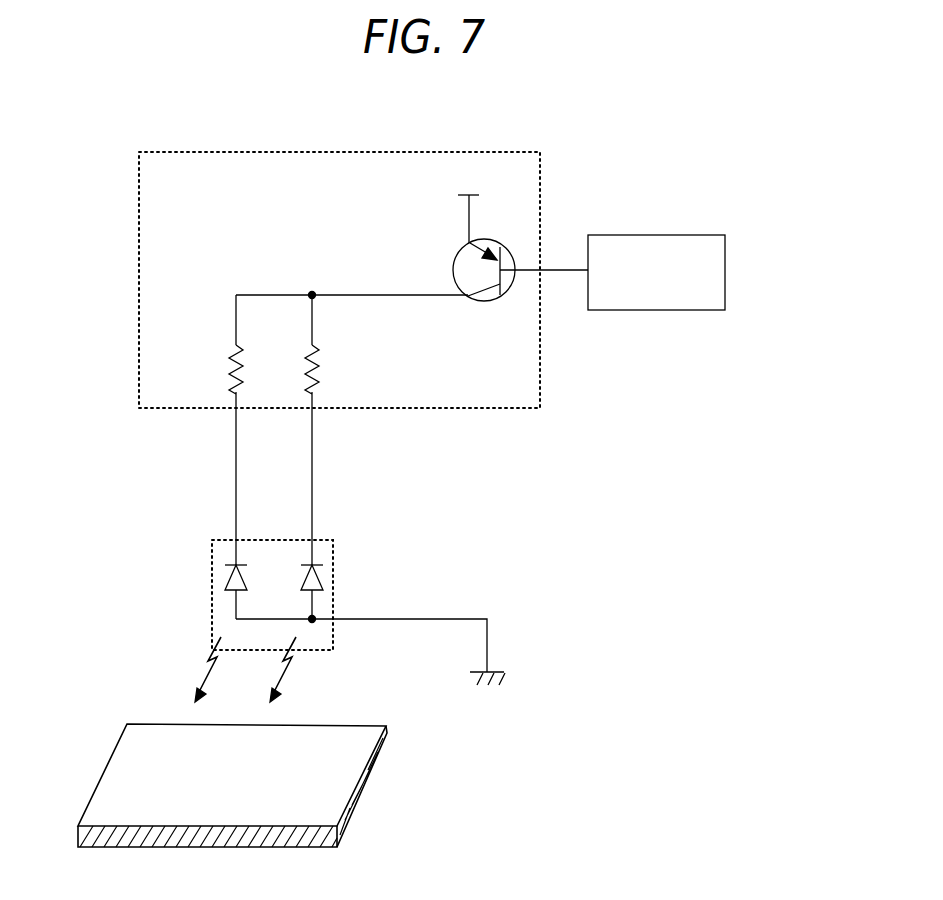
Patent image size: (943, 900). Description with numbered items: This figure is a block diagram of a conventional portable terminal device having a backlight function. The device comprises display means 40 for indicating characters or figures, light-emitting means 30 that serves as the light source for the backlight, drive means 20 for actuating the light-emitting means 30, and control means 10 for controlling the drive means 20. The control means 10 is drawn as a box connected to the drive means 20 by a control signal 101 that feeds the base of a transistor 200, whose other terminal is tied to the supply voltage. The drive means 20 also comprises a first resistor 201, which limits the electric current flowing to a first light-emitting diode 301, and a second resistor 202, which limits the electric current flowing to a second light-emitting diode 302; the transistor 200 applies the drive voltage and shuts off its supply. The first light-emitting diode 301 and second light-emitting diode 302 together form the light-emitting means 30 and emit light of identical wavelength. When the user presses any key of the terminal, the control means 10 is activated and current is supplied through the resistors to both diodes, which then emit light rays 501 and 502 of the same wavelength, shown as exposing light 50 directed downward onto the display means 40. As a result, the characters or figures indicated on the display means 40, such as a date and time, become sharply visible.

The control means 10 is at (725, 272).
The drive means 20 is at (540, 173).
The light-emitting means 30 is at (333, 572).
The display means 40 is at (365, 793).
The exposing light 50 is at (186, 688).
The control signal 101 is at (568, 277).
The transistor 200 is at (453, 266).
The first resistor 201 is at (227, 368).
The second resistor 202 is at (323, 368).
The first light-emitting diode 301 is at (240, 563).
The second light-emitting diode 302 is at (316, 563).
The light ray 501 is at (212, 675).
The light ray 502 is at (288, 675).